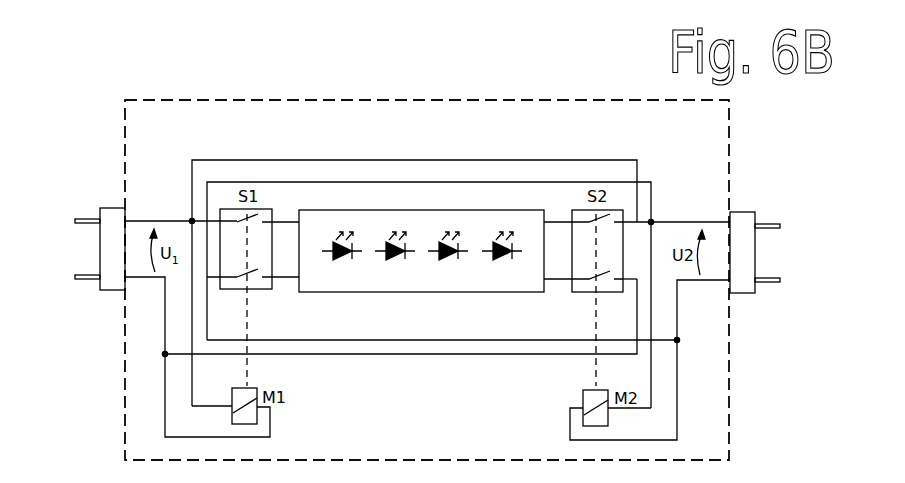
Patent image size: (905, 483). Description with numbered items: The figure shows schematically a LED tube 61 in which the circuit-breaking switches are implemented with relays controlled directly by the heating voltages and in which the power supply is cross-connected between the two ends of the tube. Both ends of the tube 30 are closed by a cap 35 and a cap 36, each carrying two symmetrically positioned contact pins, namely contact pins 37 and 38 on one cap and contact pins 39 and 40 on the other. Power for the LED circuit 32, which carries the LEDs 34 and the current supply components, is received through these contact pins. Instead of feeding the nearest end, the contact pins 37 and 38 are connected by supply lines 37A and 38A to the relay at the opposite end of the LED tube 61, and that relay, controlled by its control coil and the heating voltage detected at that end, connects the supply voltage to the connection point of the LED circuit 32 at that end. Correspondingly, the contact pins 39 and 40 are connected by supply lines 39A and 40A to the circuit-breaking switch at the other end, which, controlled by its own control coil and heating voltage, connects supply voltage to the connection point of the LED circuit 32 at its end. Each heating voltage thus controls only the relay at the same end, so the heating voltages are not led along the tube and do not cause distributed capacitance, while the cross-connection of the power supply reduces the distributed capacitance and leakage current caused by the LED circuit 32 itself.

The LED tube 61 is at (389, 83).
The tube 30 is at (455, 100).
The cap 35 is at (113, 208).
The cap 36 is at (744, 212).
The contact pin 37 is at (86, 218).
The contact pin 38 is at (90, 280).
The contact pin 39 is at (779, 224).
The contact pin 40 is at (779, 283).
The supply line 37A is at (423, 160).
The supply line 38A is at (412, 354).
The supply line 39A is at (651, 182).
The supply line 40A is at (412, 340).
The LED circuit 32 is at (431, 271).
The LEDs 34 is at (345, 262).